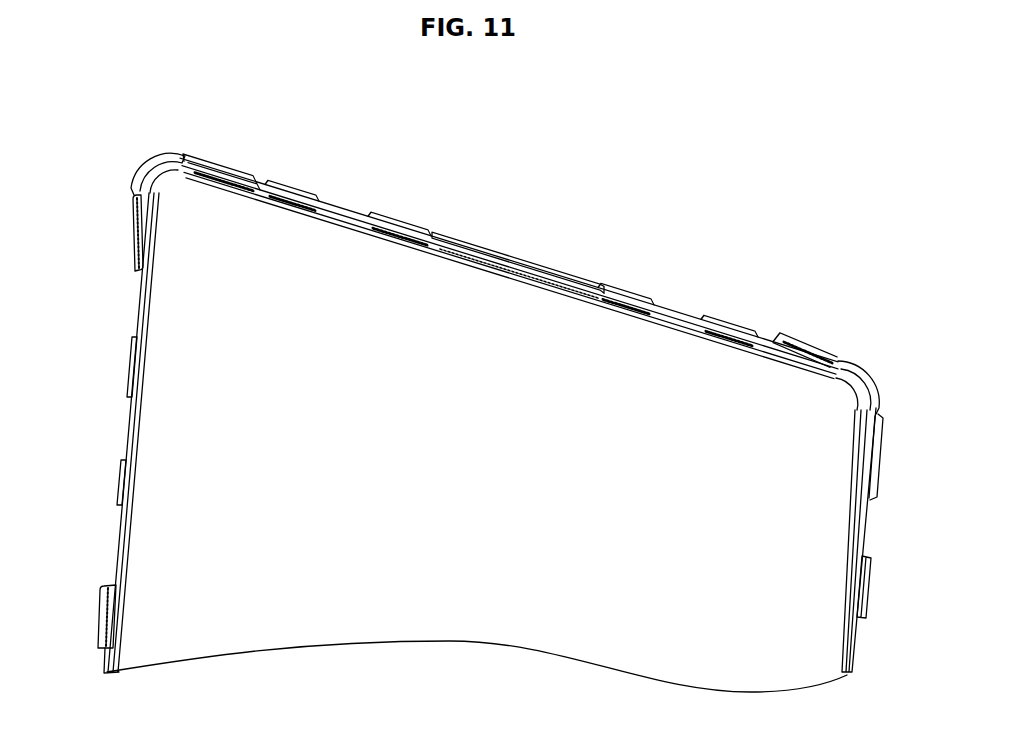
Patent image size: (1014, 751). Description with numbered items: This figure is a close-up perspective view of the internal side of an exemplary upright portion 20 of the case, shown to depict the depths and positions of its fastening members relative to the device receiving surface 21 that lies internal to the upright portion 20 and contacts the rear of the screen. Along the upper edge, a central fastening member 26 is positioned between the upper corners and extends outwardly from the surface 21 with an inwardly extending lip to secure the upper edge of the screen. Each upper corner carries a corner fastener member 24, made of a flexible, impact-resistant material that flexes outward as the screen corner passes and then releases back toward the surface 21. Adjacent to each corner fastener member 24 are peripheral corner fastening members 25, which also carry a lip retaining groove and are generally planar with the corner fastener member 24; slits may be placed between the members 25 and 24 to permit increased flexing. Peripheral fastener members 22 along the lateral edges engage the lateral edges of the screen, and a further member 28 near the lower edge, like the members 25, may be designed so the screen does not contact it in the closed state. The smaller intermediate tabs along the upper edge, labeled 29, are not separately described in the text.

The upright portion 20 is at (726, 184).
The device receiving surface 21 is at (546, 343).
The peripheral fastener member 22 is at (129, 470).
The corner fastener member 24 is at (146, 162).
The peripheral corner fastening member 25 is at (213, 160).
The central fastening member 26 is at (525, 264).
The member 28 is at (102, 603).
The intermediate tabs 29 is at (290, 203).